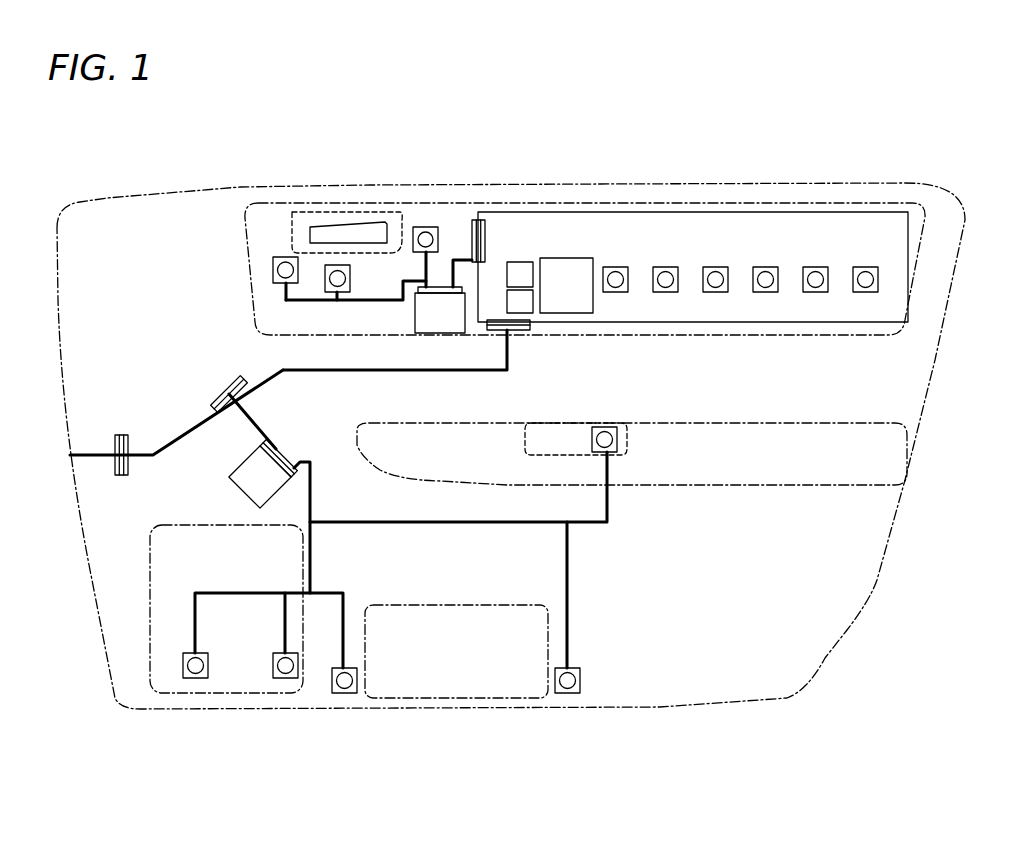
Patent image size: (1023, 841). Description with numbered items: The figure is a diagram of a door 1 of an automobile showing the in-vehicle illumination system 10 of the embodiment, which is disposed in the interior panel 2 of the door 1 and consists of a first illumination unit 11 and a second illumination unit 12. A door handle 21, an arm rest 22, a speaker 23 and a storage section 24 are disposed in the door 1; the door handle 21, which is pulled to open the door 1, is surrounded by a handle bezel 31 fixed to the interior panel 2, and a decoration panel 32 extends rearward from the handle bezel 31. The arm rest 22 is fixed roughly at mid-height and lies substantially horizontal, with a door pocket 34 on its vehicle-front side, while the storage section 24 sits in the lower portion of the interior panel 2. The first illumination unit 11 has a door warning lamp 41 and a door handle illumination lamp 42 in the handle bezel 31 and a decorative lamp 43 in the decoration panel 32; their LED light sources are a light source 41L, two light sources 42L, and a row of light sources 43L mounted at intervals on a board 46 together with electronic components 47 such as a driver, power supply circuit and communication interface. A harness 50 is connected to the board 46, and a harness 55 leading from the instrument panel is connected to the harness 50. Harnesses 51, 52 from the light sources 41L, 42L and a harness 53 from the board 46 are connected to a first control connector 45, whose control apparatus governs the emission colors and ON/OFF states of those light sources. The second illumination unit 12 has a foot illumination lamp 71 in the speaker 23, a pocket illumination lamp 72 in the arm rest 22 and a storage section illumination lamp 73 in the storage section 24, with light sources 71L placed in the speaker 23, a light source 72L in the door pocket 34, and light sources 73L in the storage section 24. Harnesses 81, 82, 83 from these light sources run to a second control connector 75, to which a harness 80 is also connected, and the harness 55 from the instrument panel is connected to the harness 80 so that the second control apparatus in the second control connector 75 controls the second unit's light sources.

The door 1 is at (522, 424).
The interior panel 2 is at (910, 377).
The in-vehicle illumination system 10 is at (693, 246).
The first illumination unit 11 is at (693, 267).
The second illumination unit 12 is at (412, 608).
The door handle 21 is at (323, 226).
The arm rest 22 is at (817, 486).
The speaker 23 is at (152, 660).
The storage section 24 is at (427, 699).
The handle bezel 31 is at (585, 231).
The decoration panel 32 is at (684, 200).
The door pocket 34 is at (538, 437).
The door warning lamp 41 is at (453, 205).
The light source for door warning lamp 41L is at (424, 227).
The door handle illumination lamp 42 is at (271, 302).
The light sources for door handle illumination lamp 42L is at (338, 296).
The decorative lamp 43 is at (738, 263).
The light sources for decorative lamp 43L is at (614, 294).
The first control connector 45 is at (418, 334).
The board 46 is at (800, 324).
The electronic components 47 is at (514, 262).
The harness 50 is at (468, 371).
The harness 51 is at (431, 272).
The harness 52 is at (358, 305).
The harness 53 is at (484, 332).
The harness 55 is at (183, 422).
The foot illumination lamp 71 is at (224, 710).
The light sources for foot illumination lamp 71L is at (182, 675).
The pocket illumination lamp 72 is at (637, 426).
The light source for pocket illumination lamp 72L is at (585, 426).
The storage section illumination lamp 73 is at (489, 727).
The light sources for storage section illumination lamp 73L is at (343, 697).
The second control connector 75 is at (237, 476).
The harness 80 is at (264, 420).
The harness 81 is at (290, 592).
The harness 82 is at (593, 527).
The harness 83 is at (343, 592).